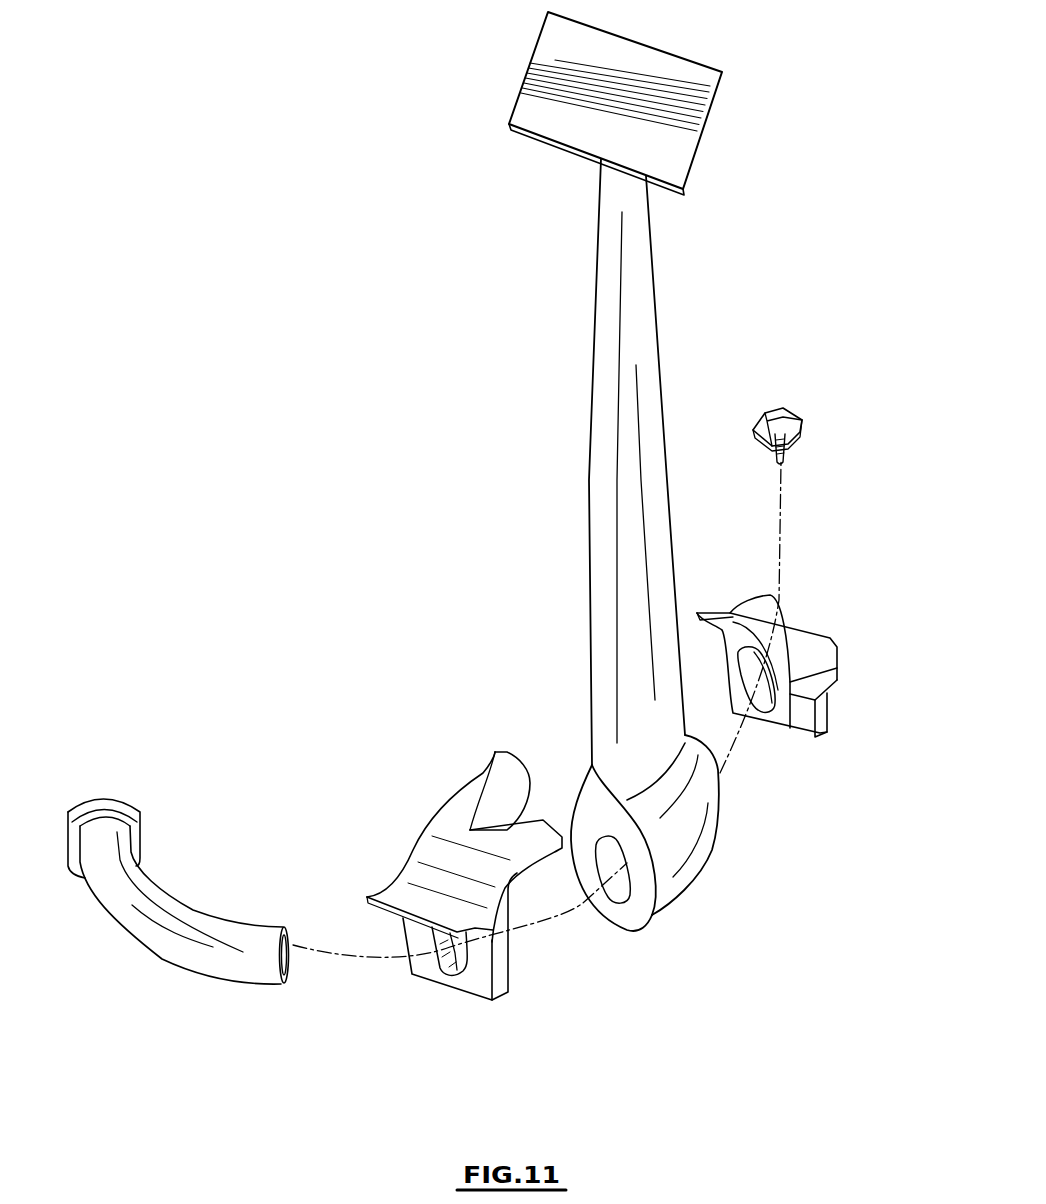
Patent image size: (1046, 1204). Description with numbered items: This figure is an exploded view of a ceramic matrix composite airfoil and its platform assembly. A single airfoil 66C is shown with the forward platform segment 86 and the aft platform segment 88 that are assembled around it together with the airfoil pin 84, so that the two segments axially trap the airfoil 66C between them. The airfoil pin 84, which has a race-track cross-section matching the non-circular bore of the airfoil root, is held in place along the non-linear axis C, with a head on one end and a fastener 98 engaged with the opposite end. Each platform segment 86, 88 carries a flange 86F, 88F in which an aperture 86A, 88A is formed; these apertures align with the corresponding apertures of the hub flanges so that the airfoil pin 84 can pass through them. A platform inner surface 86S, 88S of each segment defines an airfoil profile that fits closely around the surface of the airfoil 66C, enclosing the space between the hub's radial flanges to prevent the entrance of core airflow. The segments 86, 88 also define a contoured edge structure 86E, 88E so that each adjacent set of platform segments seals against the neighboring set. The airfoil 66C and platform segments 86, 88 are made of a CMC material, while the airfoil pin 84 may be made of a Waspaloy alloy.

The airfoil 66C is at (615, 471).
The airfoil pin 84 is at (170, 900).
The non-linear axis C is at (355, 957).
The forward platform segment 86 is at (472, 885).
The contoured edge structure 86E is at (470, 792).
The platform inner surface 86S is at (530, 785).
The flange 86F is at (503, 987).
The aperture 86A is at (447, 968).
The aft platform segment 88 is at (814, 689).
The contoured edge structure 88E is at (720, 614).
The platform inner surface 88S is at (757, 603).
The flange 88F is at (822, 742).
The aperture 88A is at (762, 711).
The fastener 98 is at (792, 440).